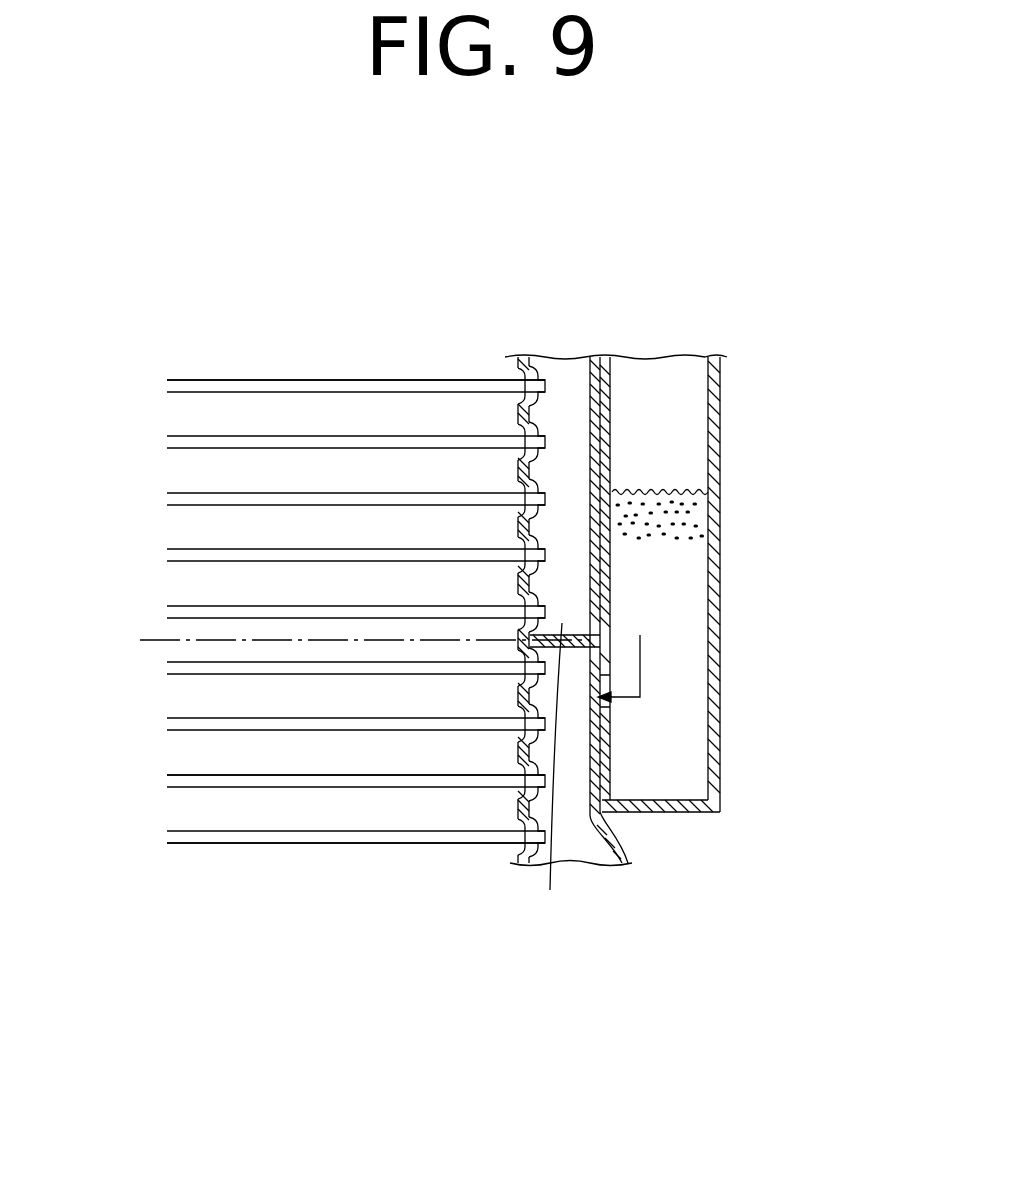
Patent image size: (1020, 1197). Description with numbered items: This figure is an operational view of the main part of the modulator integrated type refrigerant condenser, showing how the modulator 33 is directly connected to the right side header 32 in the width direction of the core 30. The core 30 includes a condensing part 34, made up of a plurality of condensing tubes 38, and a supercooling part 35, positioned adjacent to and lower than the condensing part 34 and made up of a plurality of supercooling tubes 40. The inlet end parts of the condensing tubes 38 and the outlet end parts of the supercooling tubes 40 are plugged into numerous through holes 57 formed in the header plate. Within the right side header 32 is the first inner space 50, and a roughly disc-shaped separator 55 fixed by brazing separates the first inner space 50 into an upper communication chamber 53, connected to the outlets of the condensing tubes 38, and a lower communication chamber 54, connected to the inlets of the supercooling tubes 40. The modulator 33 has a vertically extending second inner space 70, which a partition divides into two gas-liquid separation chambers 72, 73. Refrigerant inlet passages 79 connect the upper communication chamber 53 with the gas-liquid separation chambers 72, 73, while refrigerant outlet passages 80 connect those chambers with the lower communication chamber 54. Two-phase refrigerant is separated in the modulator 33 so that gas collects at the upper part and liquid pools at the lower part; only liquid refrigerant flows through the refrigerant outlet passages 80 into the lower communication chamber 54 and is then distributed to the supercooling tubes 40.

The core 30 is at (365, 353).
The right side header 32 is at (628, 850).
The modulator 33 is at (737, 391).
The condensing part 34 is at (188, 529).
The supercooling part 35 is at (198, 752).
The condensing tubes 38 is at (211, 379).
The supercooling tubes 40 is at (218, 844).
The first inner space 50 is at (510, 958).
The upper communication chamber 53 is at (550, 890).
The lower communication chamber 54 is at (591, 844).
The separator 55 is at (607, 628).
The through holes 57 is at (545, 383).
The second inner space 70 is at (825, 435).
The gas-liquid separation chamber 72 is at (652, 455).
The gas-liquid separation chamber 73 is at (715, 504).
The refrigerant inlet passages 79 is at (607, 582).
The refrigerant outlet passages 80 is at (607, 712).